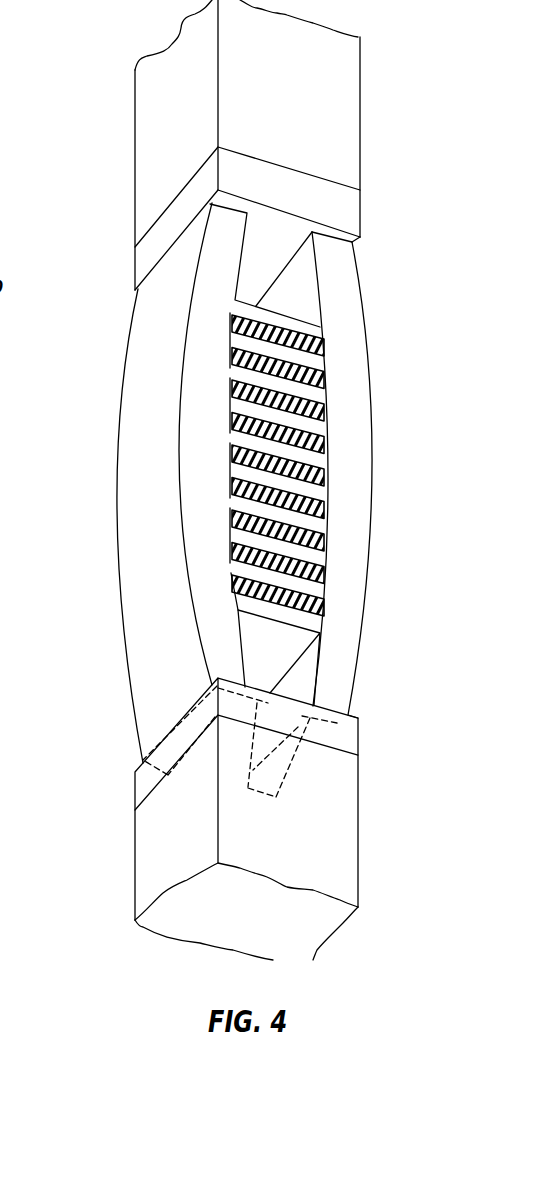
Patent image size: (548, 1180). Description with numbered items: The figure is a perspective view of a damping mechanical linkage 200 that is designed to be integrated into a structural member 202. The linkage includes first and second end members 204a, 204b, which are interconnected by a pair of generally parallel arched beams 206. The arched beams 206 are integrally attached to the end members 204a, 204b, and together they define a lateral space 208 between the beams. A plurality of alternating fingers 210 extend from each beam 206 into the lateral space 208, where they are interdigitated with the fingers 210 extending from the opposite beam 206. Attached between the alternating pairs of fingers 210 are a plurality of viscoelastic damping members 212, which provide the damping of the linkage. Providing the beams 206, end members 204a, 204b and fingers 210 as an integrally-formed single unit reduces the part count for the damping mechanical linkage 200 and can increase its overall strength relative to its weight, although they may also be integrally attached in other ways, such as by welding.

The damping mechanical linkage 200 is at (100, 355).
The structural member 202 is at (147, 107).
The first end member 204a is at (148, 228).
The second end member 204b is at (148, 783).
The arched beam 206 is at (348, 492).
The lateral space 208 is at (298, 303).
The finger 210 is at (300, 423).
The viscoelastic damping member 212 is at (322, 615).